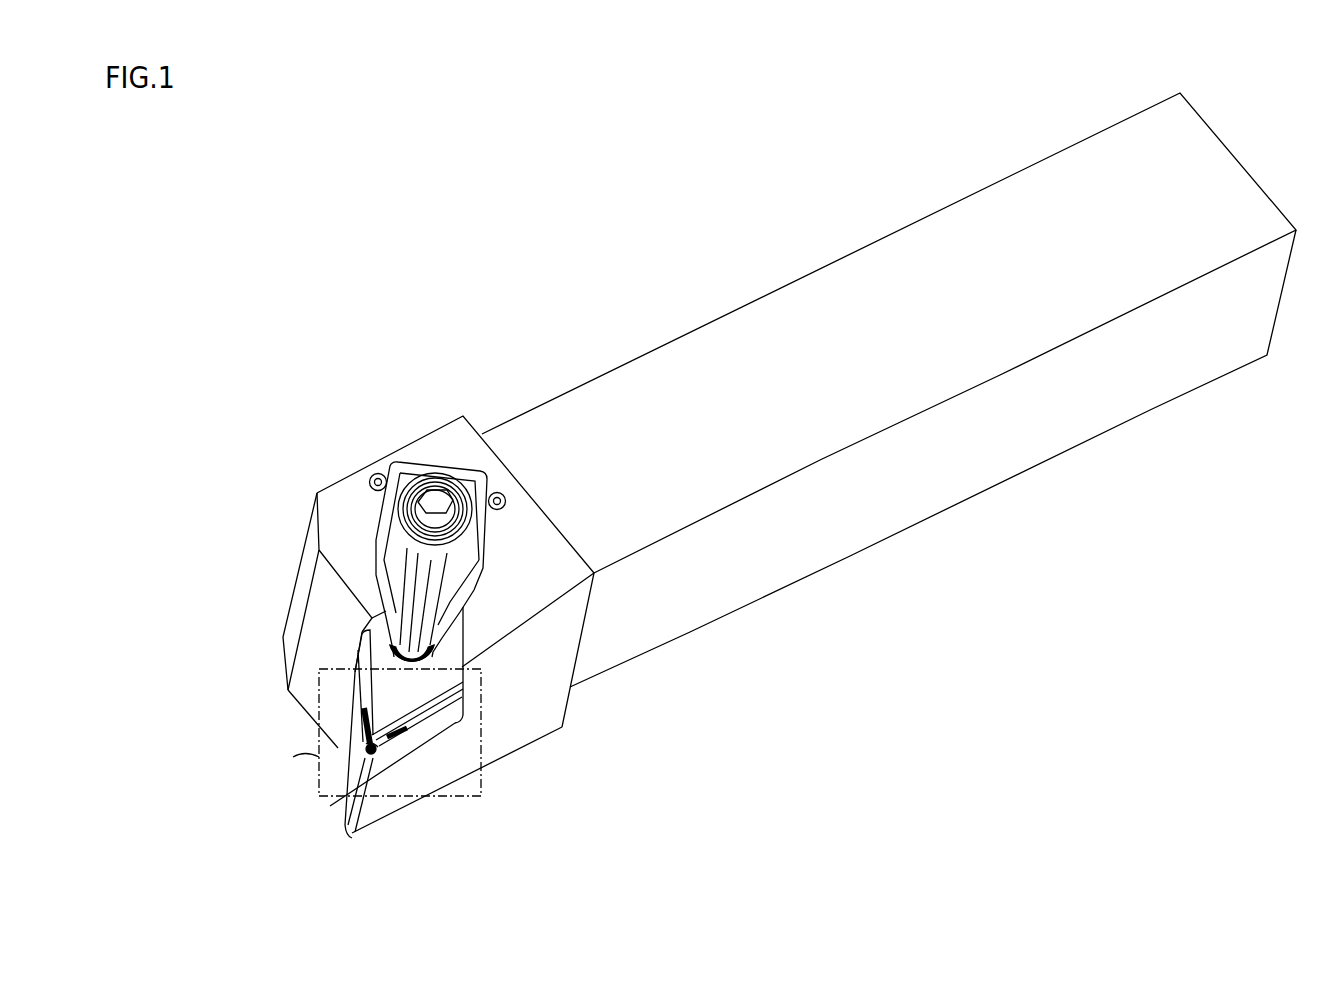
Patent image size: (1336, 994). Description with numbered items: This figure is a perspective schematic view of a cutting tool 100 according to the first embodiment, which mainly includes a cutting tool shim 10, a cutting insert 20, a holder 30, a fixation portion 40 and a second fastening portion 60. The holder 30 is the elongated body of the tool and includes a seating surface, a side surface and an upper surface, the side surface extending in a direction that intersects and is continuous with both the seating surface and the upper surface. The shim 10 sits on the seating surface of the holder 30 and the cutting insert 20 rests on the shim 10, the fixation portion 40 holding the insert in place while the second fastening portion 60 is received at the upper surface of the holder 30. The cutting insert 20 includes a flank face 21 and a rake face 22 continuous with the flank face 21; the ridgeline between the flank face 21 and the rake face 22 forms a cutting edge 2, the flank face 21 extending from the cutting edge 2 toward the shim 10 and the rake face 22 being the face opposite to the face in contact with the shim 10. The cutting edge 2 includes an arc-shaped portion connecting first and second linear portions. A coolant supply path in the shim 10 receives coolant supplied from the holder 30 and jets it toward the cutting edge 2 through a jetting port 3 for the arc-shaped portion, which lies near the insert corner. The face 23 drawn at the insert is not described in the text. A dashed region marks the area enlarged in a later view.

The cutting tool 100 is at (1029, 135).
The holder 30 is at (775, 542).
The fixation portion 40 is at (397, 590).
The second fastening portion 60 is at (441, 478).
The cutting tool shim 10 is at (398, 748).
The jetting port for arc-shaped portion 3 is at (371, 754).
The cutting insert 20 is at (540, 852).
The cutting edge 2 is at (405, 732).
The flank face 21 is at (430, 707).
The rake face 22 is at (425, 684).
The flank face 23 is at (442, 652).